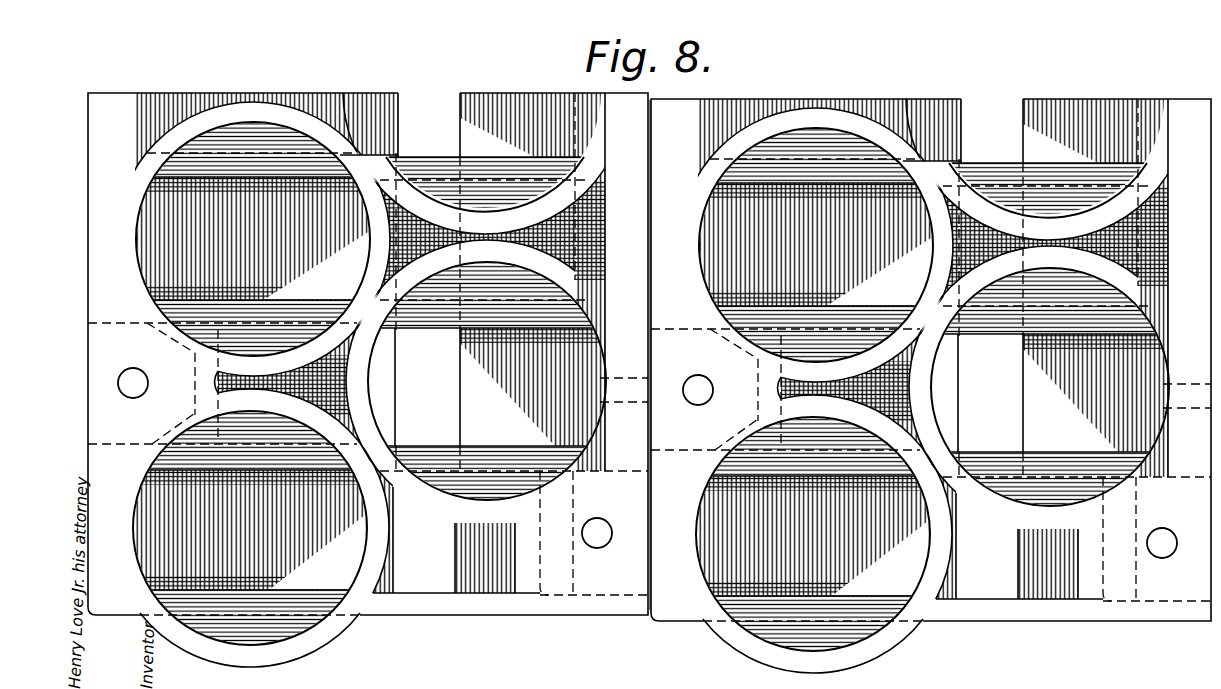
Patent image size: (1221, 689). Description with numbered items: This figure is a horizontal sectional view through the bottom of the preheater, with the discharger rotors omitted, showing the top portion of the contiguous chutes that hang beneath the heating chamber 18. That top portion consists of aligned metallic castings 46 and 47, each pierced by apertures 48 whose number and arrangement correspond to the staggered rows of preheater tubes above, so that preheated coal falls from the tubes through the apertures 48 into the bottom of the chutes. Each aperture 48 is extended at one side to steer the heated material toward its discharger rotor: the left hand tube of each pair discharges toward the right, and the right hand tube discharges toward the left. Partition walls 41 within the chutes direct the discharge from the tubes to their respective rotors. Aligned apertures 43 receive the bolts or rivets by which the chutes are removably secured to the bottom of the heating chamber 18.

The heating chamber 18 is at (660, 620).
The partition walls 41 is at (423, 447).
The aligned apertures 43 is at (131, 367).
The metallic casting 46 is at (478, 607).
The metallic casting 47 is at (1052, 621).
The apertures 48 is at (437, 197).